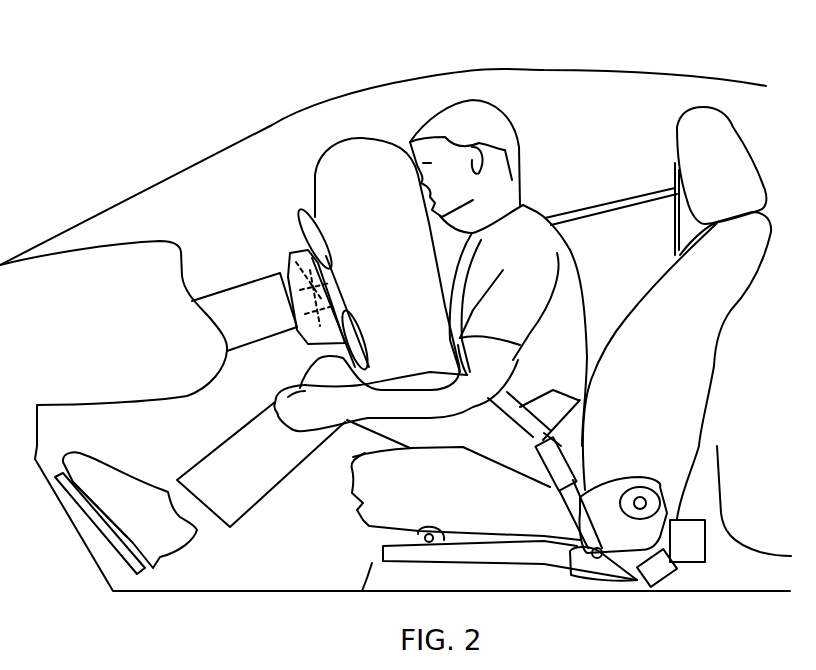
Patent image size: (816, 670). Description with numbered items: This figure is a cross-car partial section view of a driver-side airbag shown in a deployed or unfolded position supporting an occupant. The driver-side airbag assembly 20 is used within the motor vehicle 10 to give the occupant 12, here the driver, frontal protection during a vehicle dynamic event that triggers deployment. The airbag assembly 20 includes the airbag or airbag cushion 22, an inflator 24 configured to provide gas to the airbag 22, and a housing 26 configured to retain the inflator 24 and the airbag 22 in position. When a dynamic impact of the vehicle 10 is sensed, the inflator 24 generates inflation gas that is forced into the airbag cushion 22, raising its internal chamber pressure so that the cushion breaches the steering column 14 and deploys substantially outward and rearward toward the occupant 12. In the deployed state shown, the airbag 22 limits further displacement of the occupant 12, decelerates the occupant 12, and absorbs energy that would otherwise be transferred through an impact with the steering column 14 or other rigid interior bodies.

The motor vehicle 10 is at (197, 91).
The occupant 12 is at (509, 147).
The steering column 14 is at (258, 287).
The airbag assembly 20 is at (297, 208).
The airbag 22 is at (328, 162).
The inflator 24 is at (306, 336).
The housing 26 is at (290, 250).